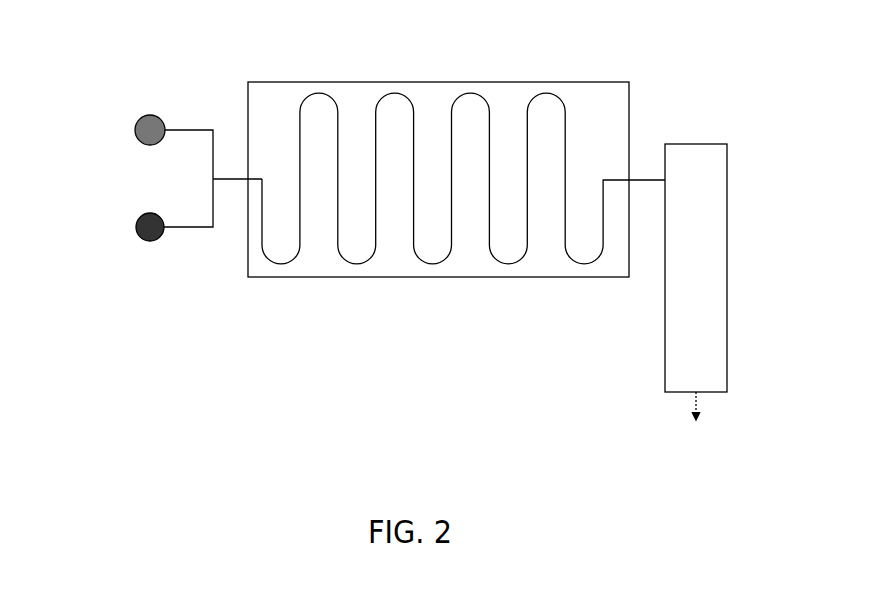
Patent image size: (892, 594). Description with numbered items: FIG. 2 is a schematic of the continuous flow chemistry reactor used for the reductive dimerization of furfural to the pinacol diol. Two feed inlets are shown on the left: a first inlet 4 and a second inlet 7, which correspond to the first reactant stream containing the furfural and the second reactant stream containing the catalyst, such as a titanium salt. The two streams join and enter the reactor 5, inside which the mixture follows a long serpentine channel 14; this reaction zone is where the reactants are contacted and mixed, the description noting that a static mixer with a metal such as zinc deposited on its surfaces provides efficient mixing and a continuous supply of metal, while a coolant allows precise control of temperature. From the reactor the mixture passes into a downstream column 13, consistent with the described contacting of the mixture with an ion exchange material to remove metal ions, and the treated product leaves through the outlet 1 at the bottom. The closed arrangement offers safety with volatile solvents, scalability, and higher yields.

The outlet 1 is at (697, 435).
The first inlet 4 is at (138, 115).
The mixing chamber 5 is at (471, 91).
The second inlet 7 is at (147, 254).
The detector 13 is at (692, 300).
The serpentine channel 14 is at (463, 256).